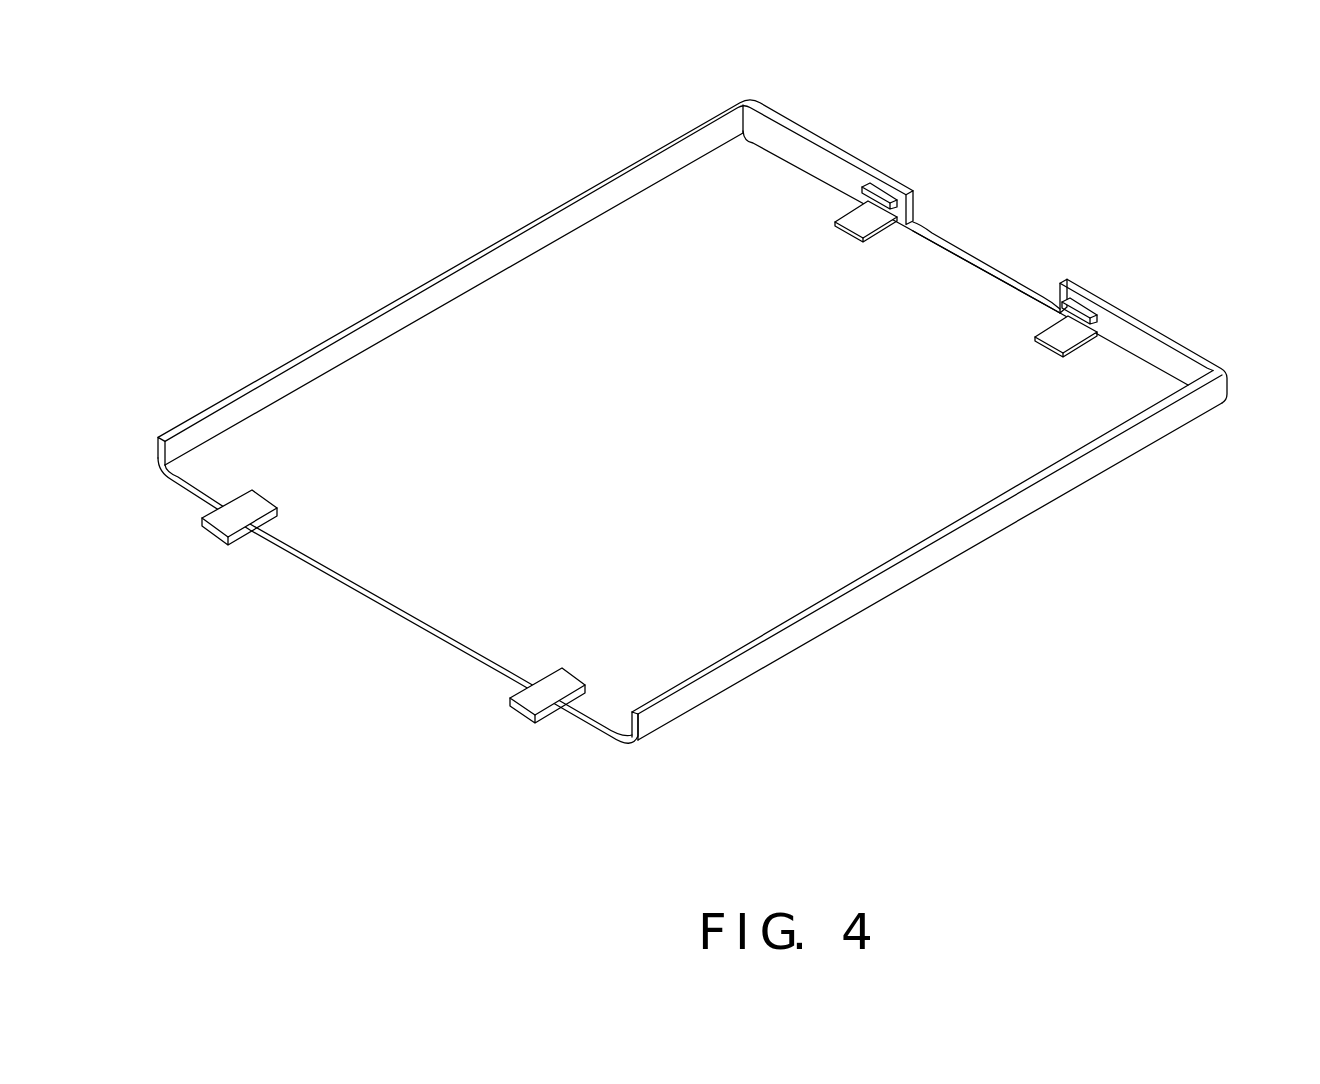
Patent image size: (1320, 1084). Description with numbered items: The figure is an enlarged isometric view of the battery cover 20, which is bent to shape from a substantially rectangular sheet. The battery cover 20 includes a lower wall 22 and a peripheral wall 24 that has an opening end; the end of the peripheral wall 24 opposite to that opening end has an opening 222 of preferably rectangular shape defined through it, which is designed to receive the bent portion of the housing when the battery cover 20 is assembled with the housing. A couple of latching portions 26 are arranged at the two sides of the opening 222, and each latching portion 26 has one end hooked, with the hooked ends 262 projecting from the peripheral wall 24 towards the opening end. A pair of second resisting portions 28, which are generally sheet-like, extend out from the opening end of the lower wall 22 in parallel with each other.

The battery cover 20 is at (696, 421).
The lower wall 22 is at (358, 562).
The opening 222 is at (960, 230).
The peripheral wall 24 is at (945, 553).
The latching portion 26 is at (858, 222).
The hooked end 262 is at (880, 194).
The second resisting portion 28 is at (535, 698).